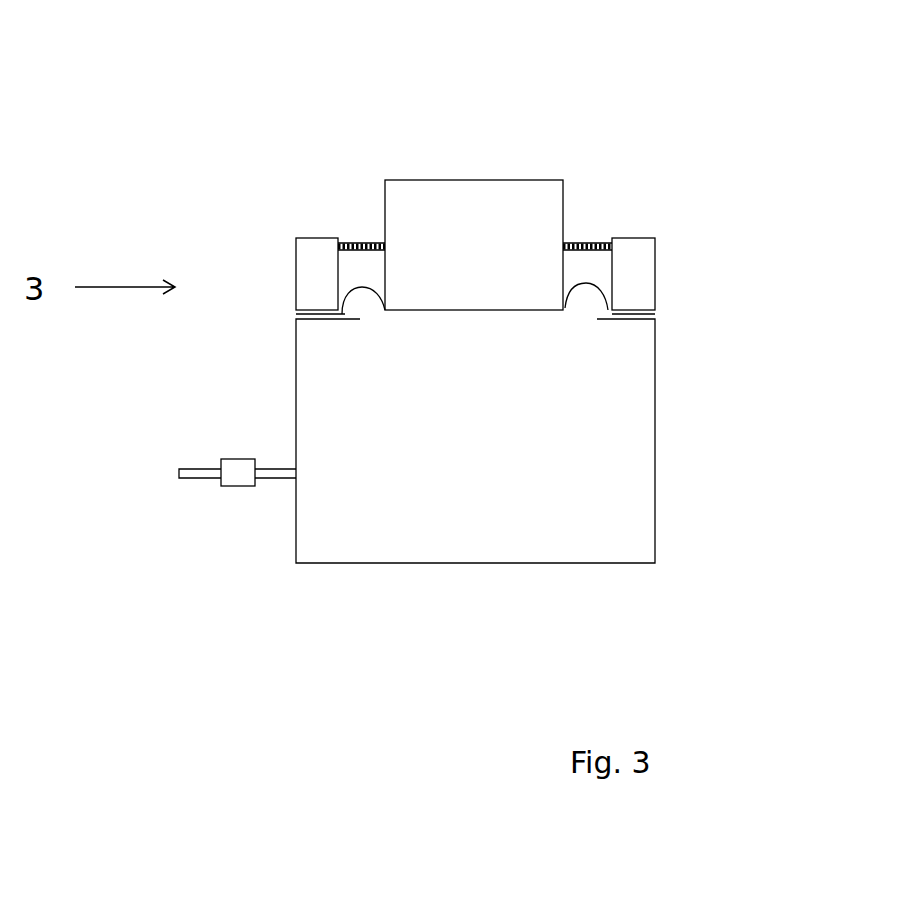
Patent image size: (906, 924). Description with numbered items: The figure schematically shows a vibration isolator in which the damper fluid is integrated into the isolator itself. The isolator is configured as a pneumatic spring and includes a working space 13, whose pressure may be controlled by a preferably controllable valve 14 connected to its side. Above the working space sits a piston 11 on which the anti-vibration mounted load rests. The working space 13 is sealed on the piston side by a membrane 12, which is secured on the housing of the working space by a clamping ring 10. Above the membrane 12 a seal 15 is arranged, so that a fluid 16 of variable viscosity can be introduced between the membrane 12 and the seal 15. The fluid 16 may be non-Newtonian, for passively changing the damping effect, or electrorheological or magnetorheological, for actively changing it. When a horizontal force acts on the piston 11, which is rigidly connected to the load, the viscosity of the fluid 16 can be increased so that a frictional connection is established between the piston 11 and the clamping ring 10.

The clamping ring 10 is at (312, 262).
The piston 11 is at (455, 230).
The membrane 12 is at (356, 288).
The working space 13 is at (525, 458).
The valve 14 is at (230, 472).
The seal 15 is at (589, 245).
The fluid 16 is at (593, 267).